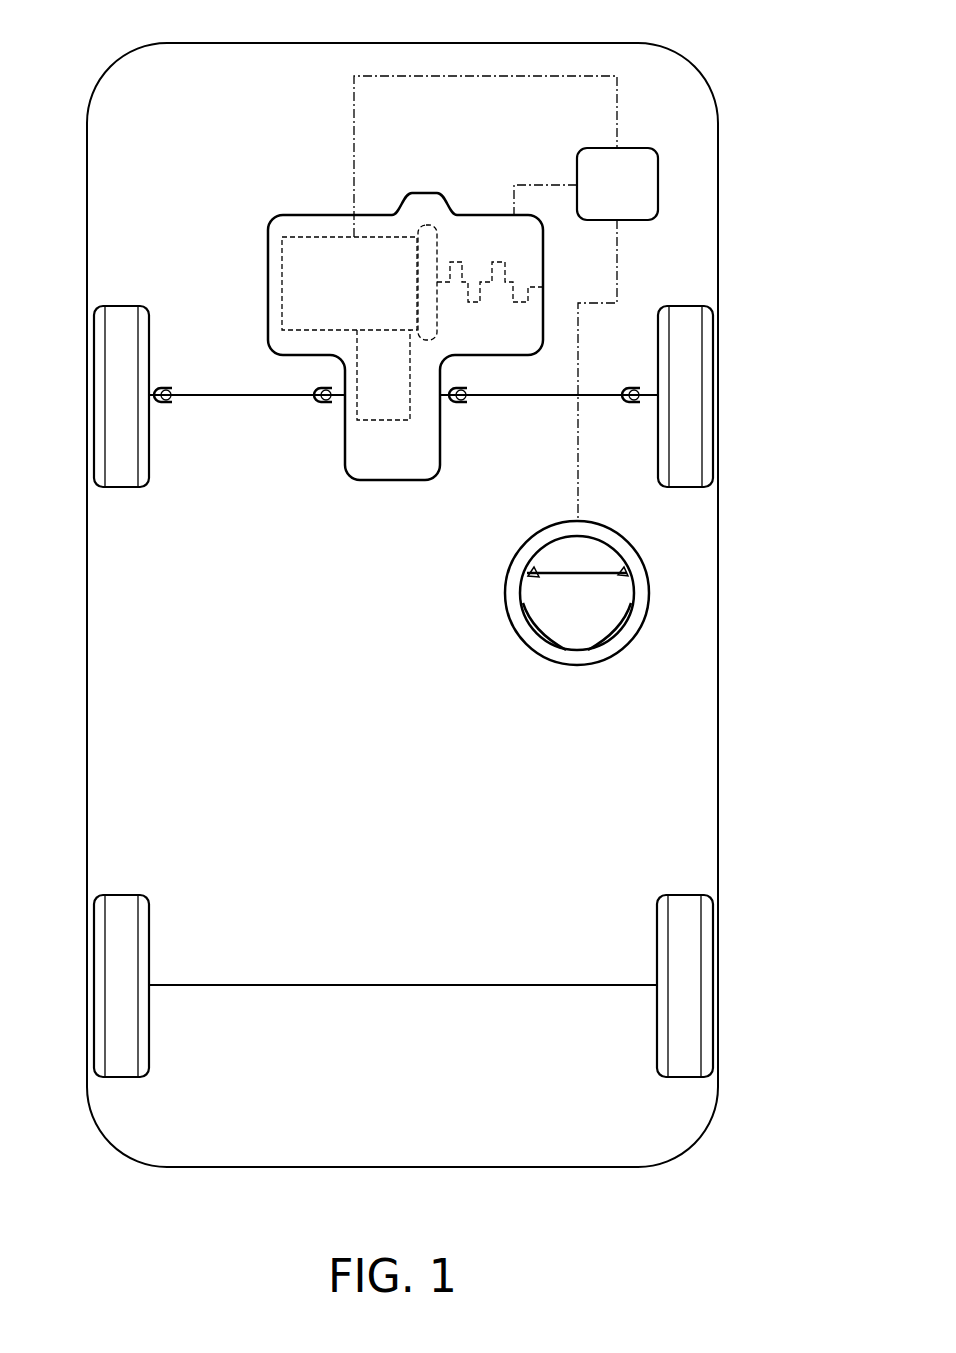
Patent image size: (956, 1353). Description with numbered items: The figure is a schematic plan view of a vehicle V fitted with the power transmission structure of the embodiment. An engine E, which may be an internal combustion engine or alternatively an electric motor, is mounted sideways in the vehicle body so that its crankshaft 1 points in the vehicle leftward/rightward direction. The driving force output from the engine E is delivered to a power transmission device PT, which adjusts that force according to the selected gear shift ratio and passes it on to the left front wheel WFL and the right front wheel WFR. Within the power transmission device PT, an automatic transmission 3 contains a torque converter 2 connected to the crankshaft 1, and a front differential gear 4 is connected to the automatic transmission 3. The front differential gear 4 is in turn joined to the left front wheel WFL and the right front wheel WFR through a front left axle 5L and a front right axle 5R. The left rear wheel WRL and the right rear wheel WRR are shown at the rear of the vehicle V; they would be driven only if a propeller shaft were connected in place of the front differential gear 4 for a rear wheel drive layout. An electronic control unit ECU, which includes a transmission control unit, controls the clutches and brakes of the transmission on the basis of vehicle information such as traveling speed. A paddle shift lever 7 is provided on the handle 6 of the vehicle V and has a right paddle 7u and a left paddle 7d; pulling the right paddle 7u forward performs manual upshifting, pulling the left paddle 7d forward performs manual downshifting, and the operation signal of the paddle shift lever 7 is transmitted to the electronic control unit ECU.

The vehicle V is at (688, 60).
The power transmission device PT is at (330, 180).
The engine E is at (487, 216).
The crankshaft 1 is at (468, 300).
The torque converter 2 is at (431, 224).
The automatic transmission 3 is at (297, 236).
The front differential gear 4 is at (412, 408).
The front left axle 5L is at (278, 400).
The front right axle 5R is at (568, 400).
The handle 6 is at (520, 629).
The paddle shift lever 7 is at (431, 512).
The right paddle 7u is at (620, 570).
The left paddle 7d is at (532, 570).
The electronic control unit ECU is at (644, 199).
The left front wheel WFL is at (121, 328).
The right front wheel WFR is at (683, 326).
The left rear wheel WRL is at (121, 914).
The right rear wheel WRR is at (683, 916).